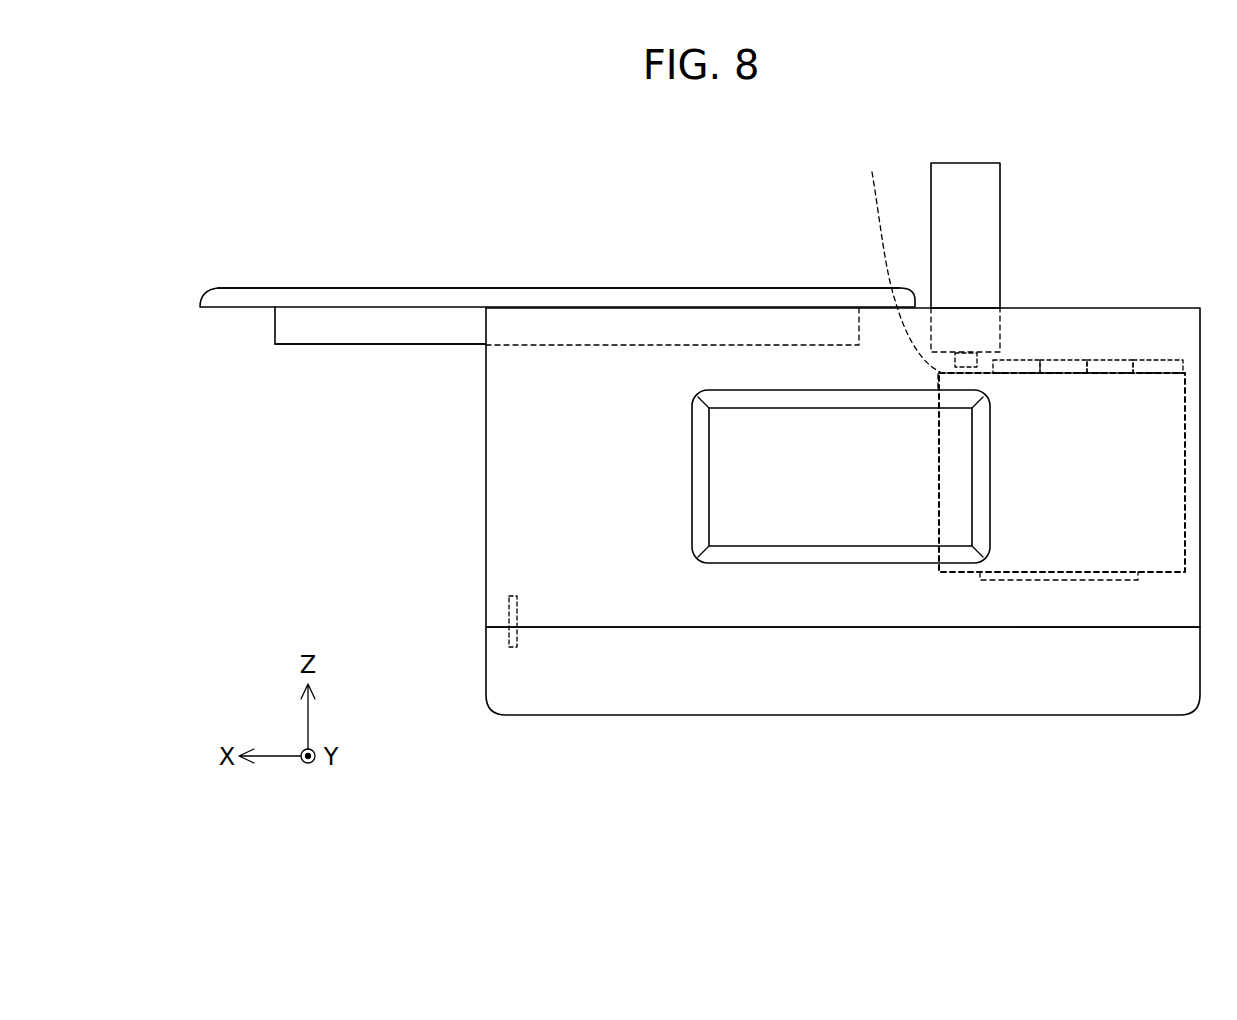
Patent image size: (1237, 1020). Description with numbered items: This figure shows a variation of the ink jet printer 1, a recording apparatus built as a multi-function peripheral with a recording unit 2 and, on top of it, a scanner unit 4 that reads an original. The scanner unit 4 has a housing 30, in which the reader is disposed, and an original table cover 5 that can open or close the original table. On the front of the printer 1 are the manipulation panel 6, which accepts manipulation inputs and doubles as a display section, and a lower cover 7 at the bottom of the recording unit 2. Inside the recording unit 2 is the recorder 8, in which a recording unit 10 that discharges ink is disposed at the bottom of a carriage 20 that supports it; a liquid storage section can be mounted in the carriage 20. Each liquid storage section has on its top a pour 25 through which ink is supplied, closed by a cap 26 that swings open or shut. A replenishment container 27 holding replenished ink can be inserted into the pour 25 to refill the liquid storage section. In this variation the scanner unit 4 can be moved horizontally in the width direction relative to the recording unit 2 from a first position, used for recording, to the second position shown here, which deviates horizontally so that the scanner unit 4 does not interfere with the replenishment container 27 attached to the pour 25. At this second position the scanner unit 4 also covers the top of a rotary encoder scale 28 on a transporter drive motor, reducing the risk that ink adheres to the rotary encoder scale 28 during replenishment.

The ink jet printer 1 is at (1150, 236).
The recording unit 2 is at (486, 550).
The scanner unit 4 is at (328, 264).
The original table cover 5 is at (433, 287).
The manipulation panel 6 is at (827, 530).
The lower cover 7 is at (678, 678).
The recorder 8 is at (1170, 783).
The recording unit 10 is at (1110, 580).
The carriage 20 is at (1158, 573).
The pour 25 is at (1008, 271).
The cap 26 is at (1158, 360).
The replenishment container 27 is at (1000, 163).
The rotary encoder scale 28 is at (509, 647).
The housing 30 is at (533, 345).